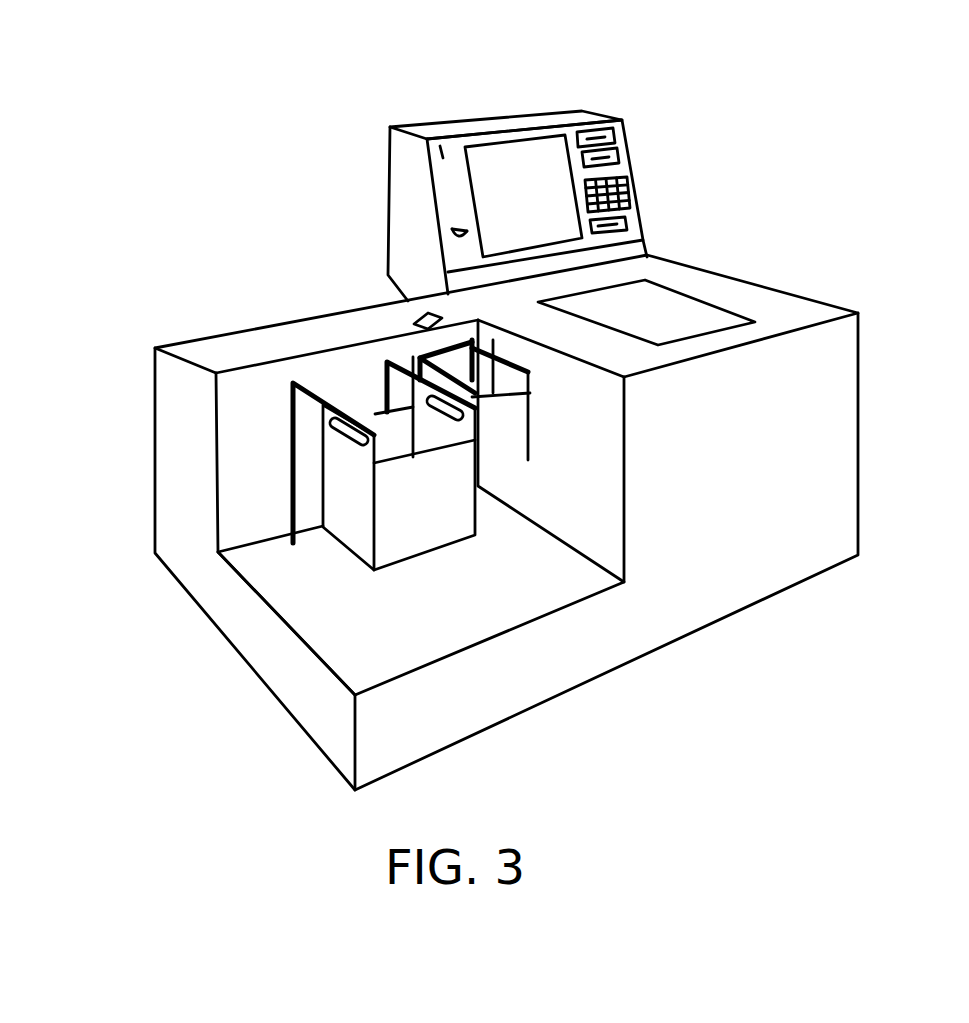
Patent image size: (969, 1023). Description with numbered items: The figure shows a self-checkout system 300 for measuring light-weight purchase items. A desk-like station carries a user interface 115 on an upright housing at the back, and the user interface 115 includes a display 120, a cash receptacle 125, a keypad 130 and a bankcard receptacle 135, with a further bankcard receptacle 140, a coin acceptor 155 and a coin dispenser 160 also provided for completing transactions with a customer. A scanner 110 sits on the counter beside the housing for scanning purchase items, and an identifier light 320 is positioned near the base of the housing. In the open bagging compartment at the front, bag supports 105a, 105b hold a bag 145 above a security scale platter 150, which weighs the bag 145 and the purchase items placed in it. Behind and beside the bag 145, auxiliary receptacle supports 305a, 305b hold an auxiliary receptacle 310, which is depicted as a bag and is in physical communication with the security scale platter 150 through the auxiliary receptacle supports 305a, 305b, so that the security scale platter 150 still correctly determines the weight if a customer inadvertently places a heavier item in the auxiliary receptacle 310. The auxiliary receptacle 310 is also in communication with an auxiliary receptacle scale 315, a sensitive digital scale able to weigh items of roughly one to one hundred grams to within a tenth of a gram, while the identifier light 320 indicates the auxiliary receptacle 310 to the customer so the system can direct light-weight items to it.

The self-checkout system 300 is at (82, 78).
The scanner 110 is at (592, 303).
The user interface 115 is at (440, 130).
The display 120 is at (518, 168).
The cash receptacle 125 is at (618, 132).
The keypad 130 is at (621, 172).
The bankcard receptacle 135 is at (629, 200).
The bankcard receptacle 140 is at (604, 130).
The bag 145 is at (347, 490).
The security scale platter 150 is at (265, 558).
The coin acceptor 155 is at (413, 153).
The coin dispenser 160 is at (455, 231).
The bag support 105a is at (322, 400).
The bag support 105b is at (411, 356).
The auxiliary receptacle support 305a is at (420, 356).
The auxiliary receptacle support 305b is at (510, 350).
The auxiliary receptacle 310 is at (510, 430).
The auxiliary receptacle scale 315 is at (472, 375).
The identifier light 320 is at (427, 313).